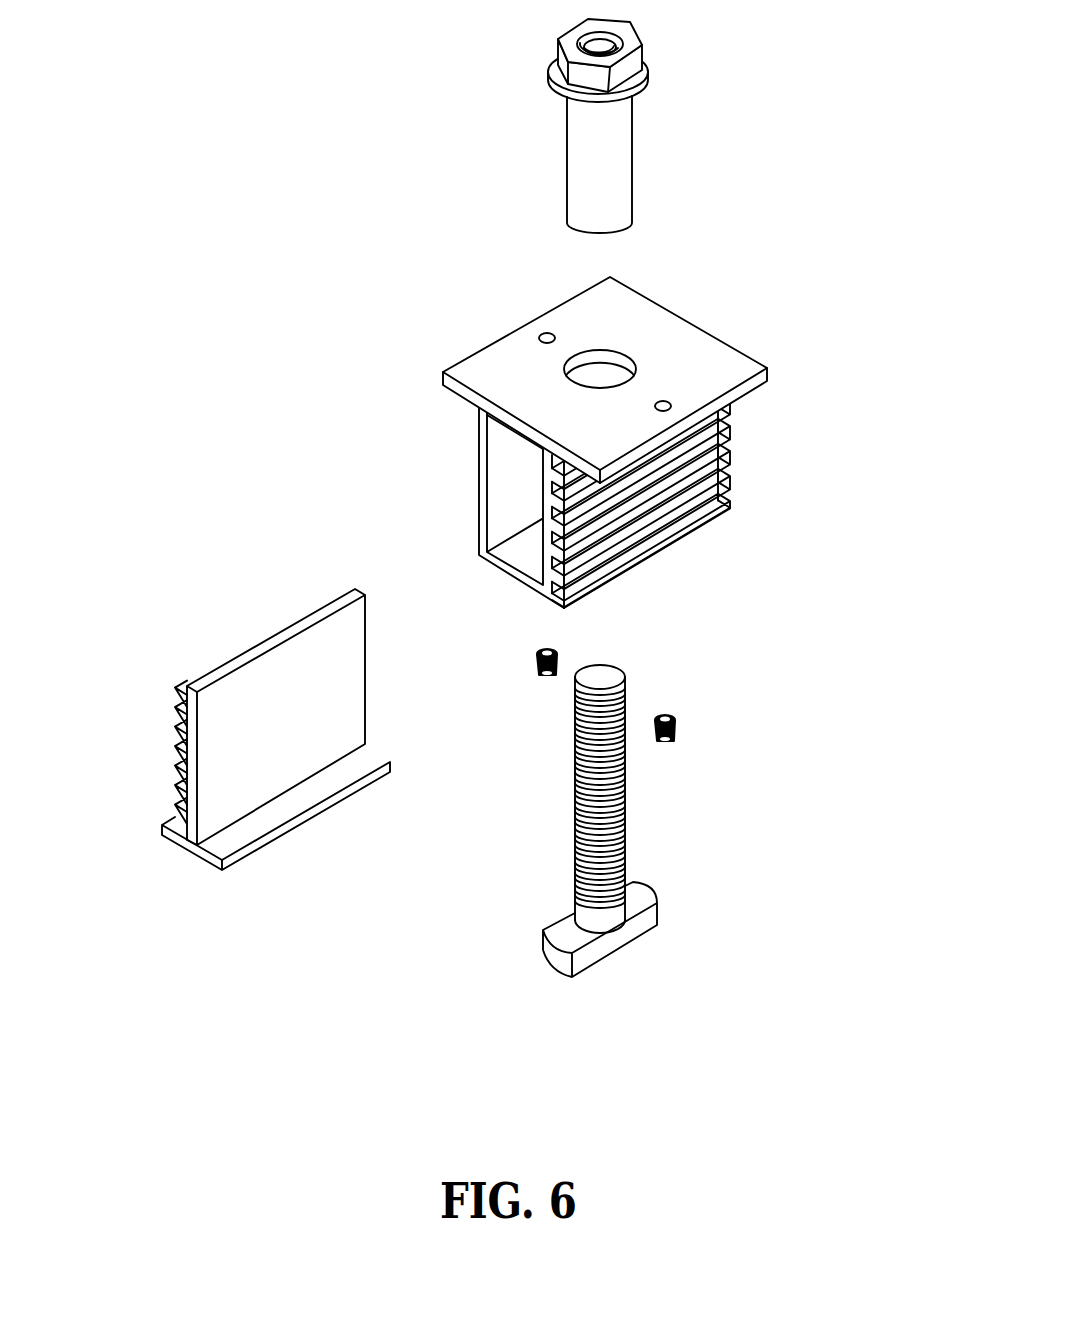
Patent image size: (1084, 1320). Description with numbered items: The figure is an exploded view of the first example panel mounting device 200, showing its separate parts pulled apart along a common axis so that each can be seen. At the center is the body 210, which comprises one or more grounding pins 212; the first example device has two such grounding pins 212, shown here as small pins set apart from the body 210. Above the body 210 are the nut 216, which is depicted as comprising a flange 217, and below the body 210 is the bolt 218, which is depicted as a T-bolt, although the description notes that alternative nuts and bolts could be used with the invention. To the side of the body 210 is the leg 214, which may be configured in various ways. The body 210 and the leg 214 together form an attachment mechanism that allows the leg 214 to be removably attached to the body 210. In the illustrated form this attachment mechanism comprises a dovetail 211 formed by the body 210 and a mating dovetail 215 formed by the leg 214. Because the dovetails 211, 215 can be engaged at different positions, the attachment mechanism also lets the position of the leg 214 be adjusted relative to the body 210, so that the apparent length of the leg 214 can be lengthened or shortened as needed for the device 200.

The panel mounting device 200 is at (765, 110).
The body 210 is at (492, 342).
The dovetail 211 is at (754, 450).
The grounding pins 212 is at (545, 678).
The leg 214 is at (238, 718).
The dovetail 215 is at (156, 750).
The nut 216 is at (552, 94).
The flange 217 is at (652, 162).
The bolt 218 is at (554, 916).